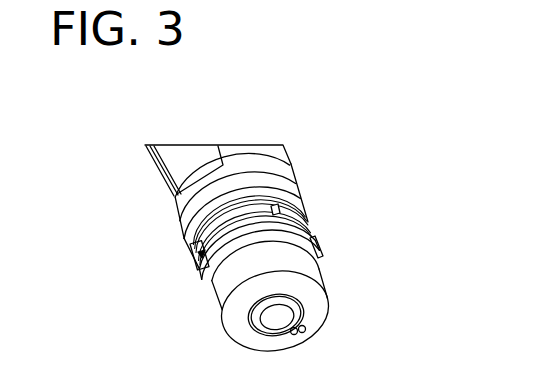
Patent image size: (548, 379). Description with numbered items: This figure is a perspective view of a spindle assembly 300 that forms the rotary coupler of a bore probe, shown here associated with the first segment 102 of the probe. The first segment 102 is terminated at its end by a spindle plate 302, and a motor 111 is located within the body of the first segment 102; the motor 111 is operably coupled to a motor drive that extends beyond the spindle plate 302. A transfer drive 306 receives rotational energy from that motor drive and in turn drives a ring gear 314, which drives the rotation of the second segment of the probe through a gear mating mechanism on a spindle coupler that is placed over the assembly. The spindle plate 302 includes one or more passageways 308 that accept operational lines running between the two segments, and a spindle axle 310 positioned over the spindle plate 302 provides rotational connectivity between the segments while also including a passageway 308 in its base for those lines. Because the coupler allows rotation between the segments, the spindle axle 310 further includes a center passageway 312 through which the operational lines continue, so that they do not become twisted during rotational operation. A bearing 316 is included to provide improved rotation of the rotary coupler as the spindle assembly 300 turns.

The imaging device assembly 300 is at (261, 106).
The first segment 102 is at (300, 146).
The motor 111 is at (226, 143).
The spindle plate 302 is at (173, 220).
The transfer drive 306 is at (320, 249).
The passageway 308 is at (192, 271).
The spindle axle 310 is at (303, 190).
The center passageway 312 is at (296, 334).
The ring gear 314 is at (314, 244).
The bearing 316 is at (323, 289).